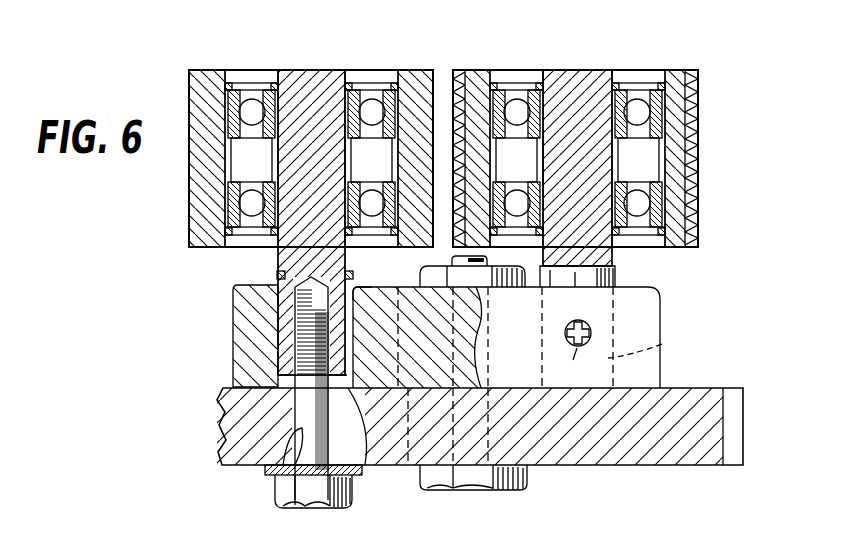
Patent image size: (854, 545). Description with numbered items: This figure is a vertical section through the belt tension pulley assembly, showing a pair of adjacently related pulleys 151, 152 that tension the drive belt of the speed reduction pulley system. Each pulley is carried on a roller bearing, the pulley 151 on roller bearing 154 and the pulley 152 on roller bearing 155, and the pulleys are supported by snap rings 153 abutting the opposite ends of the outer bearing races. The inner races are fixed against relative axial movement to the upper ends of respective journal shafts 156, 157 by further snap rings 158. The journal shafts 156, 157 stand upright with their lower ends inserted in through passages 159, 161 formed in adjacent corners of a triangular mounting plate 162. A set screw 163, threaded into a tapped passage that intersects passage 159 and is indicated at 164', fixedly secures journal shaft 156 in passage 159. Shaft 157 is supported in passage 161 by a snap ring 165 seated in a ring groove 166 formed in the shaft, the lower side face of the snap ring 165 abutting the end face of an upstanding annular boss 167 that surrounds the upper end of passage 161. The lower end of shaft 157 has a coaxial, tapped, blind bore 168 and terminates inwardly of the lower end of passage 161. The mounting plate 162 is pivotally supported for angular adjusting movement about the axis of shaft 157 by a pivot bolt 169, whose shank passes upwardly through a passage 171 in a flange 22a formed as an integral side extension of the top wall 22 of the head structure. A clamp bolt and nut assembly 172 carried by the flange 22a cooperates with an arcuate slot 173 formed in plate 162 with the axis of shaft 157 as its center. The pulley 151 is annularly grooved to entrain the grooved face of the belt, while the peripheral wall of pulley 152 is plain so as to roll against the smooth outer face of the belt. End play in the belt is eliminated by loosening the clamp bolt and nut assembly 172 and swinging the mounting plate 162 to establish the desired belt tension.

The top wall 22 is at (221, 415).
The flange 22a is at (688, 388).
The pulley 151 is at (698, 72).
The pulley 152 is at (190, 76).
The snap rings 153 is at (231, 84).
The roller bearing 154 is at (657, 130).
The roller bearing 155 is at (232, 127).
The journal shaft 156 is at (580, 75).
The journal shaft 157 is at (318, 95).
The snap rings 158 is at (272, 84).
The through passage 159 is at (649, 344).
The through passage 161 is at (364, 466).
The mounting plate 162 is at (655, 297).
The set screw 163 is at (590, 331).
The screw slot 164' is at (567, 362).
The snap ring 165 is at (262, 285).
The ring groove 166 is at (279, 271).
The annular boss 167 is at (360, 284).
The blind bore 168 is at (300, 334).
The pivot bolt 169 is at (316, 497).
The passage 171 is at (267, 471).
The clamp bolt and nut assembly 172 is at (520, 488).
The arcuate slot 173 is at (692, 192).